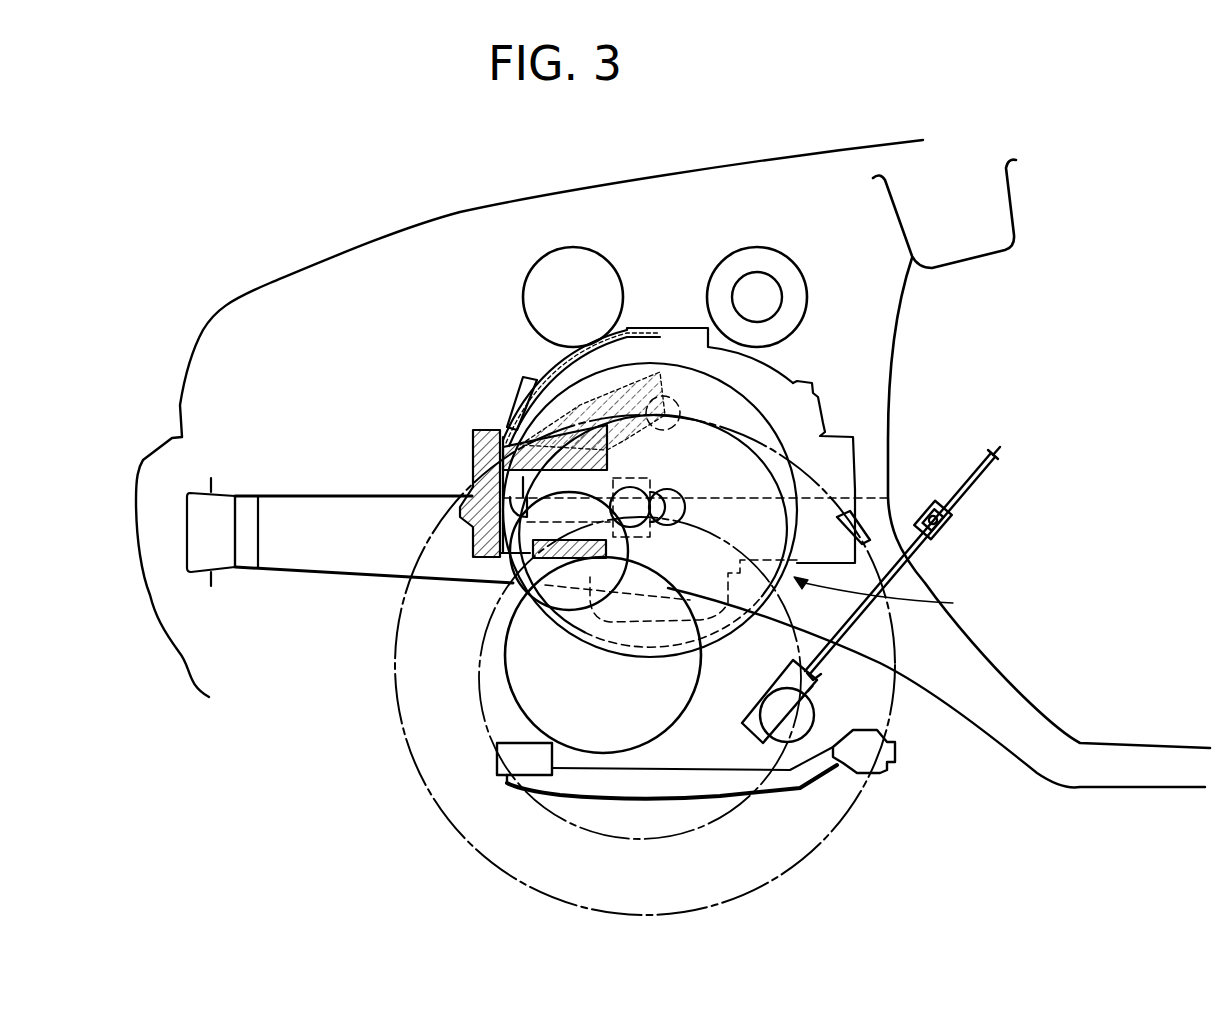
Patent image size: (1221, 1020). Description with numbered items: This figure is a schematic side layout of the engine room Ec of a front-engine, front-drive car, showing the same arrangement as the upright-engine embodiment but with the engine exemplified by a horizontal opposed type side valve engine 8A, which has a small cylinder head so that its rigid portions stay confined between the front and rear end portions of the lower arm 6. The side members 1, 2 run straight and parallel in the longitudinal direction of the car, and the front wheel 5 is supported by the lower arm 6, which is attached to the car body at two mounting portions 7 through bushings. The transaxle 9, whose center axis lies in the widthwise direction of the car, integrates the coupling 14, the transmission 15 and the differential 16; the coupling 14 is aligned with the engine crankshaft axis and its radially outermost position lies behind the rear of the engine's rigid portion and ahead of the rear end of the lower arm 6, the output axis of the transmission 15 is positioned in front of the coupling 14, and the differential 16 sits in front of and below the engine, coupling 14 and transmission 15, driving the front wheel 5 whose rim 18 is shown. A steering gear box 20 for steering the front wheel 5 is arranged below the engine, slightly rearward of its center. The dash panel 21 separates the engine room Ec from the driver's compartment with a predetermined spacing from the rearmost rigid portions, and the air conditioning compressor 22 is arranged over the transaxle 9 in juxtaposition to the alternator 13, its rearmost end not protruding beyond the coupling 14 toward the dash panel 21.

The side member 1 is at (350, 512).
The side member 2 is at (275, 503).
The front wheel 5 is at (403, 720).
The lower arm 6 is at (547, 782).
The mounting portion 7 is at (497, 760).
The horizontal opposed type engine 8A is at (653, 328).
The transaxle 9 is at (884, 600).
The alternator 13 is at (532, 264).
The coupling 14 is at (760, 400).
The transmission 15 is at (527, 580).
The differential 16 is at (677, 723).
The rim 18 is at (593, 822).
The steering gear box 20 is at (814, 713).
The dash panel 21 is at (893, 345).
The air conditioning compressor 22 is at (790, 258).
The engine room Ec is at (877, 292).